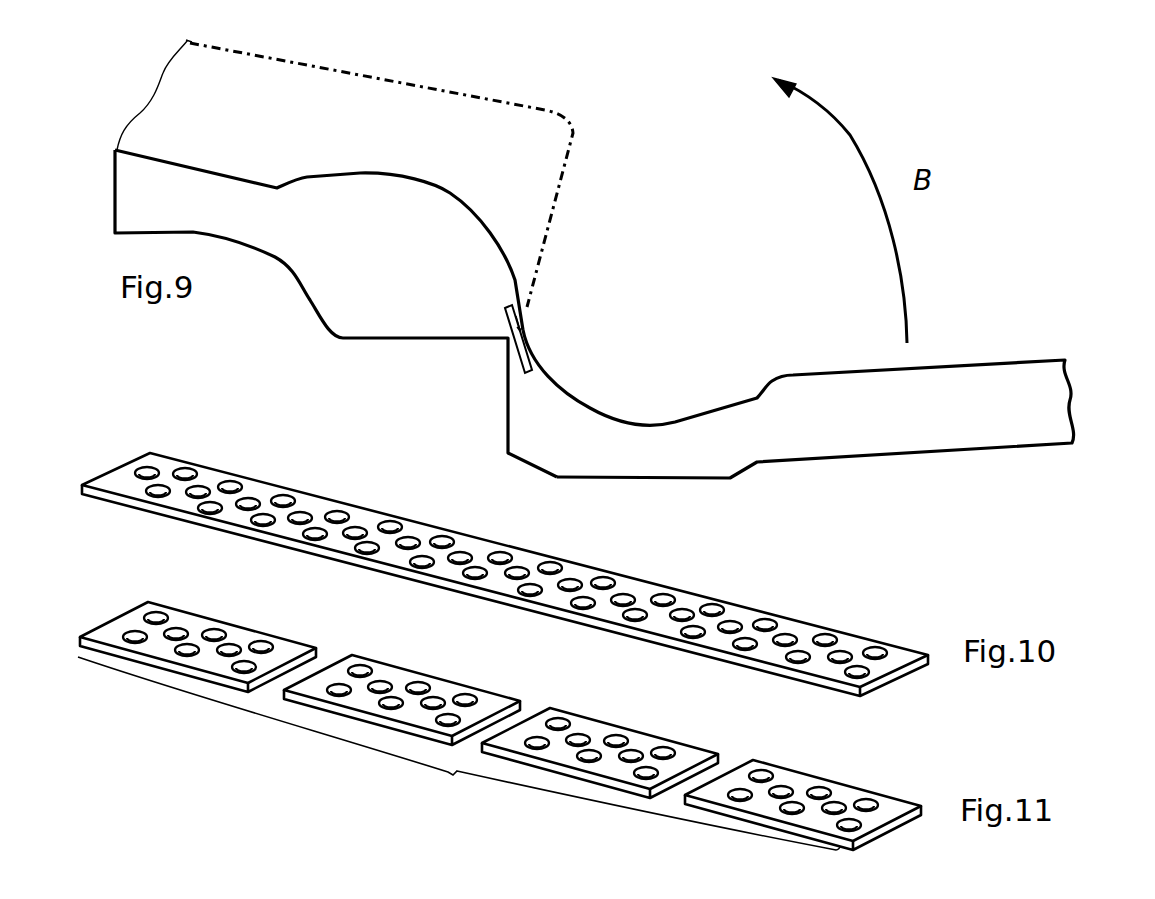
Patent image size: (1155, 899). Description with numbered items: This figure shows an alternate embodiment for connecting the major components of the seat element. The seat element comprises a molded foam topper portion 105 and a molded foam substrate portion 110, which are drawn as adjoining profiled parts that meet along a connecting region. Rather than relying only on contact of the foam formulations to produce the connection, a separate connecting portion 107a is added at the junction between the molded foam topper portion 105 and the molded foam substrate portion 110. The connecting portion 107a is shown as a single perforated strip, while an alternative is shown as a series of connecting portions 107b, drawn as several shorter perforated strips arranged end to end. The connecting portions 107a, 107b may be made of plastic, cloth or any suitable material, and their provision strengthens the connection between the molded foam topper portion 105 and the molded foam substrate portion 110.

In FIG. 9, the molded foam topper portion 105 is at (1032, 382).
In FIG. 9, the molded foam substrate portion 110 is at (150, 187).
In FIG. 9, the connecting portion 107a is at (598, 324).
In FIG. 10, the connecting portion 107a is at (747, 612).
In FIG. 9, the connecting portions 107b is at (530, 342).
In FIG. 11, the connecting portions 107b is at (177, 680).